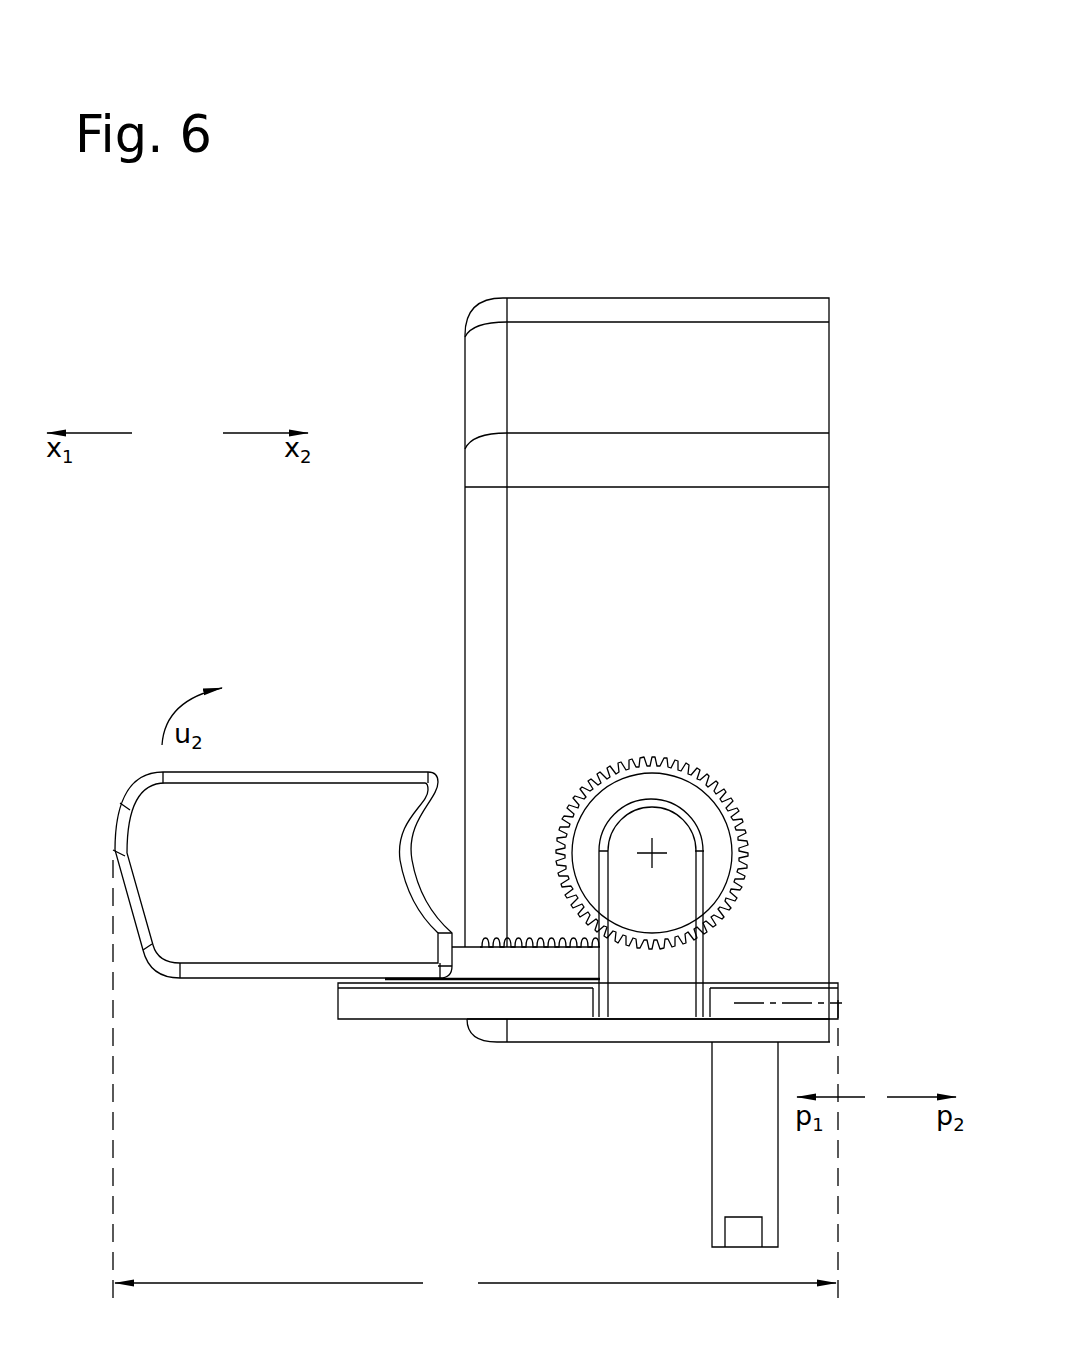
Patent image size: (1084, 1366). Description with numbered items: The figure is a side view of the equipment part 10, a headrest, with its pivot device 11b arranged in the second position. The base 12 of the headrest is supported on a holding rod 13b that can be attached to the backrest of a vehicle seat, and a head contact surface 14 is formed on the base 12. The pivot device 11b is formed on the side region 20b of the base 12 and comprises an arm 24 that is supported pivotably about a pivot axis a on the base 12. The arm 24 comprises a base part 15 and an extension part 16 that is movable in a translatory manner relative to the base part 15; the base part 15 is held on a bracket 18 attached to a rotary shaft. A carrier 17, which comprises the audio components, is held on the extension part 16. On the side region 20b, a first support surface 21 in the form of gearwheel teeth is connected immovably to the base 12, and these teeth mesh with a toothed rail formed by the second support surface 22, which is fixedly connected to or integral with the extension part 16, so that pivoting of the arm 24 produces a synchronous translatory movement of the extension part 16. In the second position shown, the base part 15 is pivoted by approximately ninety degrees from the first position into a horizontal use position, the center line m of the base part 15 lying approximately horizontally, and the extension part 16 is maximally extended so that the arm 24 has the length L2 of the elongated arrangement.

The equipment part 10 is at (795, 165).
The base 12 is at (758, 298).
The head contact surface 14 is at (463, 554).
The base part 15 is at (370, 1007).
The extension part 16 is at (477, 963).
The carrier 17 is at (232, 930).
The bracket 18 is at (650, 928).
The side region 20b is at (712, 607).
The first support surface 21 is at (721, 776).
The second support surface 22 is at (527, 952).
The arm 24 is at (333, 997).
The pivot device 11b is at (707, 951).
The holding rod 13b is at (735, 1175).
The pivot axis a is at (668, 853).
The center line m is at (842, 1003).
The length L2 is at (475, 1285).